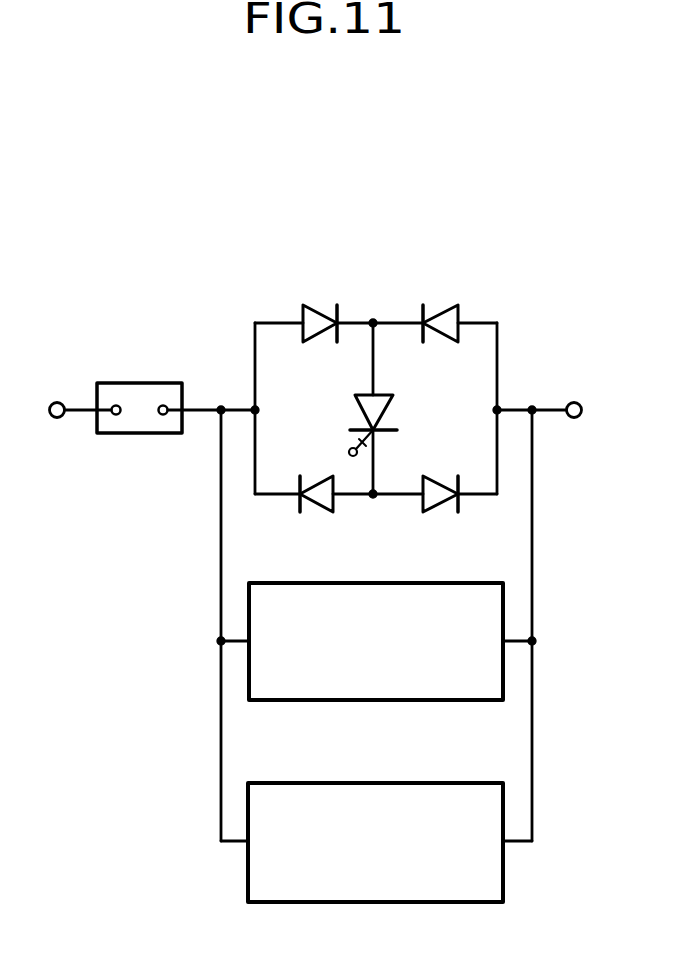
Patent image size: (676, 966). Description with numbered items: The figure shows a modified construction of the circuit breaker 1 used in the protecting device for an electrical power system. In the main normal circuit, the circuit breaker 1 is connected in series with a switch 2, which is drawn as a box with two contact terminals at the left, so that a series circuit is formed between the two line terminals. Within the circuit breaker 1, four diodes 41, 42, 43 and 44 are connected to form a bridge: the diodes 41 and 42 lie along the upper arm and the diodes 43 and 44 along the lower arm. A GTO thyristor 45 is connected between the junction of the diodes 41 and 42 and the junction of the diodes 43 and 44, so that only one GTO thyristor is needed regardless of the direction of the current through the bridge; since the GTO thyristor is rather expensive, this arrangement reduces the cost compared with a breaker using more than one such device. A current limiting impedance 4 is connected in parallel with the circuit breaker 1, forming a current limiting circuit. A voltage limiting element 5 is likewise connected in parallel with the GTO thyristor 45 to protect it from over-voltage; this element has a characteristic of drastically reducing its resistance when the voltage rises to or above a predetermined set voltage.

The circuit breaker 1 is at (376, 373).
The switch 2 is at (110, 433).
The current limiting impedance 4 is at (463, 701).
The voltage limiting element 5 is at (462, 903).
The diode 41 is at (318, 305).
The diode 42 is at (447, 305).
The diode 43 is at (313, 511).
The diode 44 is at (437, 510).
The GTO thyristor 45 is at (356, 402).